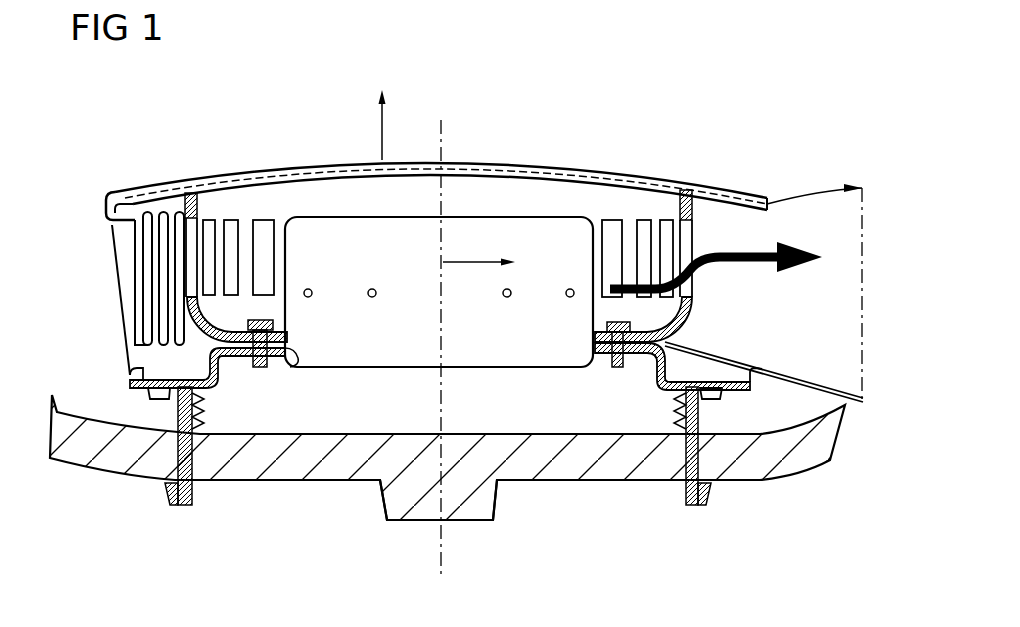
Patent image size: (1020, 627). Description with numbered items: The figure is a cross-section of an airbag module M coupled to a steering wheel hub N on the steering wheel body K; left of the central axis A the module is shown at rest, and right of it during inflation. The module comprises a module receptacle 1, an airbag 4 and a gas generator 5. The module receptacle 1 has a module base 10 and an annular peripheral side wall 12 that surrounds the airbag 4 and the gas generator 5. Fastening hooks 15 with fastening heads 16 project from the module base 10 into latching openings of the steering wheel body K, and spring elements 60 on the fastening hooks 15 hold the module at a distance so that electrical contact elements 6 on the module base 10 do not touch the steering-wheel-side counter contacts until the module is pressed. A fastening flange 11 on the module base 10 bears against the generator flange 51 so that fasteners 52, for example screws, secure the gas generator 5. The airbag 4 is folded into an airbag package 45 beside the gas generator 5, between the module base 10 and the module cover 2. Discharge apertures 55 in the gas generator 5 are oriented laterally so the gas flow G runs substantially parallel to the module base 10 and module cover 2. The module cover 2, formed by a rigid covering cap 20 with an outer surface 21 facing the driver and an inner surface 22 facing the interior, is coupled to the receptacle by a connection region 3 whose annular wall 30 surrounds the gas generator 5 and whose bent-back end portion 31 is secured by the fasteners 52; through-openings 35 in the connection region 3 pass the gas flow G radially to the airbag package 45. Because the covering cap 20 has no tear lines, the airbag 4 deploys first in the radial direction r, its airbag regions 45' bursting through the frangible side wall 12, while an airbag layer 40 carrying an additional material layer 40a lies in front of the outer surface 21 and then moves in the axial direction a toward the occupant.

The module receptacle 1 is at (221, 388).
The module cover 2 is at (733, 208).
The connection region 3 is at (697, 322).
The airbag 4 is at (136, 243).
The gas generator 5 is at (509, 372).
The electrical contact elements 6 is at (158, 398).
The module base 10 is at (130, 369).
The fastening flange 11 is at (243, 360).
The side wall 12 is at (120, 318).
The fastening hooks 15 is at (192, 478).
The fastening head 16 is at (177, 490).
The covering cap 20 is at (766, 201).
The outer surface 21 is at (546, 170).
The inner surface 22 is at (582, 172).
The annular wall 30 is at (712, 190).
The bent-back end portion 31 is at (651, 357).
The through-openings 35 is at (694, 286).
The airbag layer 40 is at (238, 175).
The additional material layer 40a is at (273, 172).
The airbag package 45 is at (117, 278).
The airbag regions 45' is at (888, 294).
The generator flange 51 is at (284, 348).
The fasteners 52 is at (618, 370).
The discharge apertures 55 is at (373, 298).
The spring elements 60 is at (196, 408).
The steering wheel body K is at (618, 472).
The steering wheel hub N is at (412, 507).
The airbag module M is at (84, 317).
The gas flow G is at (716, 257).
The central axis A is at (442, 125).
The axial direction a is at (374, 125).
The radial direction r is at (479, 249).